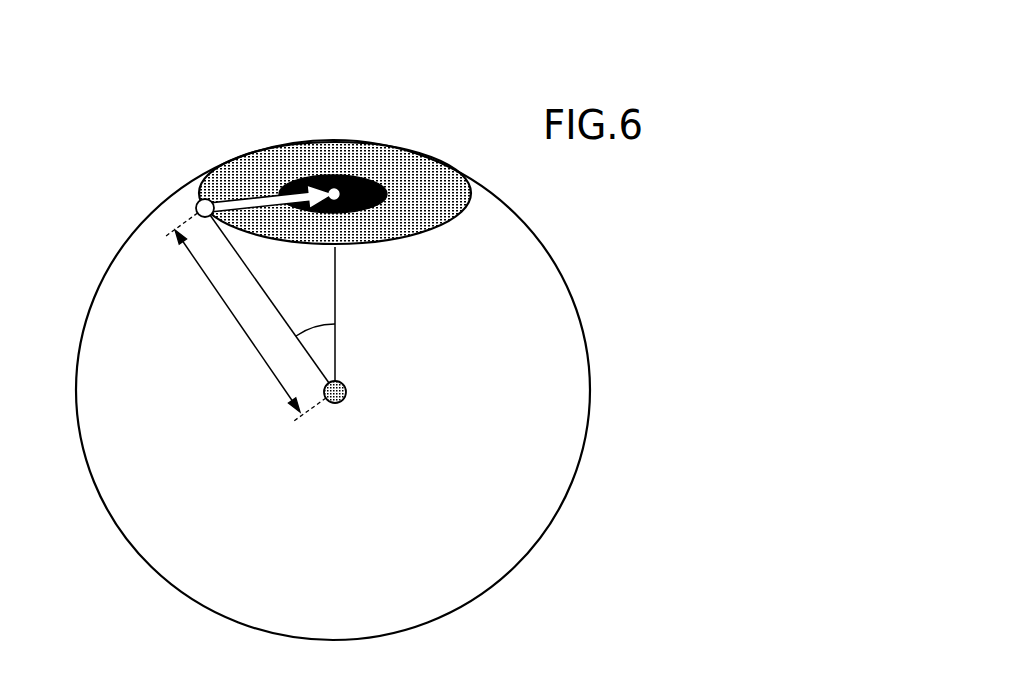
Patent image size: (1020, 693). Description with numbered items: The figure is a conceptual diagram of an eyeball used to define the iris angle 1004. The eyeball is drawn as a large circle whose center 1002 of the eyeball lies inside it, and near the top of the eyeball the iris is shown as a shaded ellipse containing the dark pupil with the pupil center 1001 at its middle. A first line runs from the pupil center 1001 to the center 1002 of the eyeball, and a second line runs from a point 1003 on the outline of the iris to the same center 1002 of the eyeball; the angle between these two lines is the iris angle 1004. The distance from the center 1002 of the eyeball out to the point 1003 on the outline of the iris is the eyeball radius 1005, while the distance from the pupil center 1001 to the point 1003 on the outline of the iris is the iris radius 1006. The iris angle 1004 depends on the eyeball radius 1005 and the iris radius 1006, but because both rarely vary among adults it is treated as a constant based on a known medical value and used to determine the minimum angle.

The pupil center 1001 is at (334, 194).
The center of the eyeball 1002 is at (343, 403).
The point on the outline of the iris 1003 is at (199, 204).
The iris angle 1004 is at (323, 335).
The eyeball radius 1005 is at (237, 317).
The iris radius 1006 is at (275, 193).